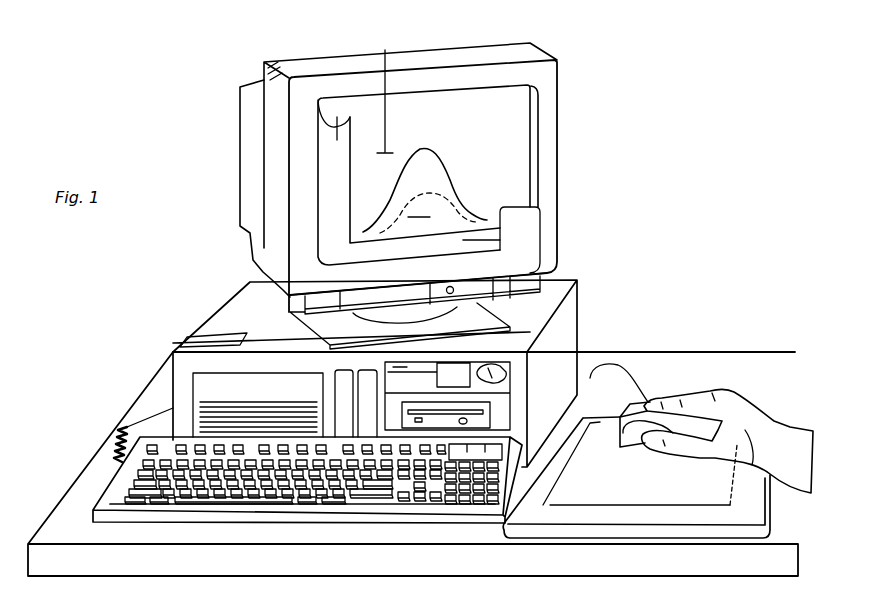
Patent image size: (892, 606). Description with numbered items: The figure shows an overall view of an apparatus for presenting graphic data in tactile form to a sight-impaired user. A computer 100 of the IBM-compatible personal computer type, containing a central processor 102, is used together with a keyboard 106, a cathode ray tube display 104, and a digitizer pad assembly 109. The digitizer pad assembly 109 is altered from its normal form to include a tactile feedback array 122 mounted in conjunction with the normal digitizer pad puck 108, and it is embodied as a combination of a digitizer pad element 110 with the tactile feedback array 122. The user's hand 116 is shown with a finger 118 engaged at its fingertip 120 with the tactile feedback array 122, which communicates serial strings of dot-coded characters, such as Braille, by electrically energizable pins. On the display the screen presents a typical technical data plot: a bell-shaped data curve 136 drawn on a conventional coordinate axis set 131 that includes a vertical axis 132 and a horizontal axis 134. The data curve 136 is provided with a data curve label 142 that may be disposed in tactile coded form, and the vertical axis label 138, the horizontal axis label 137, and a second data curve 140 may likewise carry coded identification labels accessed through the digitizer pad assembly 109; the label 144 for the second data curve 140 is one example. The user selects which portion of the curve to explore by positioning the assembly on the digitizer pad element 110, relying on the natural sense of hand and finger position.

The computer 100 is at (198, 232).
The central processor 102 is at (547, 298).
The cathode ray tube display 104 is at (556, 60).
The keyboard 106 is at (148, 513).
The digitizer pad puck 108 is at (645, 443).
The digitizer pad assembly 109 is at (590, 378).
The digitizer pad element 110 is at (620, 410).
The user's hand 116 is at (747, 408).
The finger 118 is at (720, 390).
The fingertip 120 is at (690, 393).
The tactile feedback array 122 is at (650, 398).
The coordinate axis set 131 is at (300, 250).
The vertical axis 132 is at (322, 125).
The horizontal axis 134 is at (541, 204).
The data curve 136 is at (447, 207).
The horizontal axis label 137 is at (548, 271).
The vertical axis label 138 is at (318, 105).
The second data curve 140 is at (457, 172).
The data curve label 142 is at (386, 50).
The label for the second data curve 144 is at (418, 217).